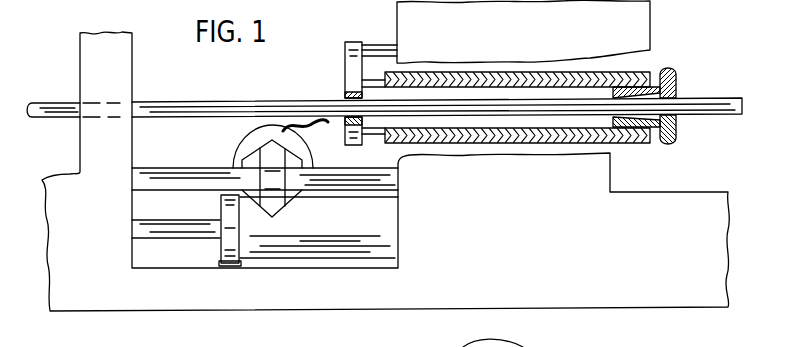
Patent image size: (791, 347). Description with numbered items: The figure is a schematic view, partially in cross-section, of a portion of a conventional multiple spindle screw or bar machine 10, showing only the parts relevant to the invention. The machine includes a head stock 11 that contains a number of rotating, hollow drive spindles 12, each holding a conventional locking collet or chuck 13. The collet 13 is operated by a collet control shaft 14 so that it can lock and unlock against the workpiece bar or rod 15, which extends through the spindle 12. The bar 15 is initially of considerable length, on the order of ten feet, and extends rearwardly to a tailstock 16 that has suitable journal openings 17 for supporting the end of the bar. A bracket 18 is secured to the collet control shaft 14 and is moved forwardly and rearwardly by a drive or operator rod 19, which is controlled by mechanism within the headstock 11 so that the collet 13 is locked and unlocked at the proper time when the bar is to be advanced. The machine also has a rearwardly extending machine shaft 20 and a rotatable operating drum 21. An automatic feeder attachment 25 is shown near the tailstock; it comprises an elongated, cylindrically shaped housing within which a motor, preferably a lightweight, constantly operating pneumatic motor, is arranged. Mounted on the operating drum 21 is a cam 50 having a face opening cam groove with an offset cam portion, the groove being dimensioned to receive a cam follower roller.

The multiple spindle screw or bar machine 10 is at (558, 31).
The head stock 11 is at (638, 16).
The drive spindle 12 is at (462, 72).
The locking collet 13 is at (675, 71).
The collet control shaft 14 is at (572, 143).
The workpiece bar 15 is at (735, 114).
The tailstock 16 is at (118, 65).
The journal opening 17 is at (92, 100).
The bracket 18 is at (352, 72).
The operator rod 19 is at (380, 45).
The machine shaft 20 is at (398, 182).
The operating drum 21 is at (398, 250).
The automatic feeder attachment 25 is at (234, 140).
The cam 50 is at (230, 268).